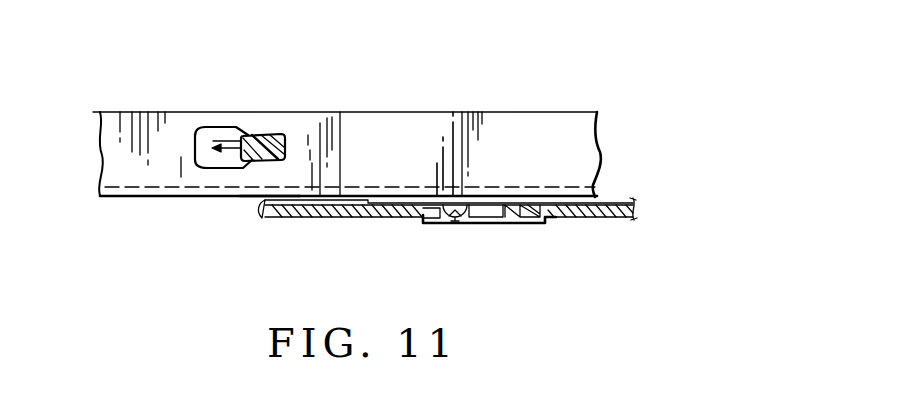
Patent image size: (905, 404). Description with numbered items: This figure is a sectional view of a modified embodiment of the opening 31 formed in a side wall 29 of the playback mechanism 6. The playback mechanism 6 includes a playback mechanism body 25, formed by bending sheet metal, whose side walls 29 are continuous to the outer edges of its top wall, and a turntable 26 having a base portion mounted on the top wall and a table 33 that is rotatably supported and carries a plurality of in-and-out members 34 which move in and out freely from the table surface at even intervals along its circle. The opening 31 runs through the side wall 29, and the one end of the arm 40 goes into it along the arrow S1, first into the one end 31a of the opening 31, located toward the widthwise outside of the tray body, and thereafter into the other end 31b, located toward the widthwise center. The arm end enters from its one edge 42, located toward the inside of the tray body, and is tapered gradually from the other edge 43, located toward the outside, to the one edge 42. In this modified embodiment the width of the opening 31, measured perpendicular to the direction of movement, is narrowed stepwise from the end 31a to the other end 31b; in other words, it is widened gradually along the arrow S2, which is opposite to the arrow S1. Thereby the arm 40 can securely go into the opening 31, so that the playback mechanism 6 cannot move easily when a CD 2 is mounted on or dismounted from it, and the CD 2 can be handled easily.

The CD 2 is at (350, 218).
The playback mechanism 6 is at (610, 157).
The playback mechanism body 25 is at (515, 112).
The turntable 26 is at (534, 223).
The side walls 29 is at (443, 132).
The opening 31 is at (198, 126).
The one end of the opening 31a is at (207, 169).
The other end of the opening 31b is at (257, 198).
The table 33 is at (483, 218).
The in-and-out members 34 is at (452, 218).
The arm 40 is at (261, 131).
The one edge 42 is at (308, 135).
The other edge 43 is at (244, 162).
The arrow S1 is at (230, 140).
The arrow S2 is at (226, 151).